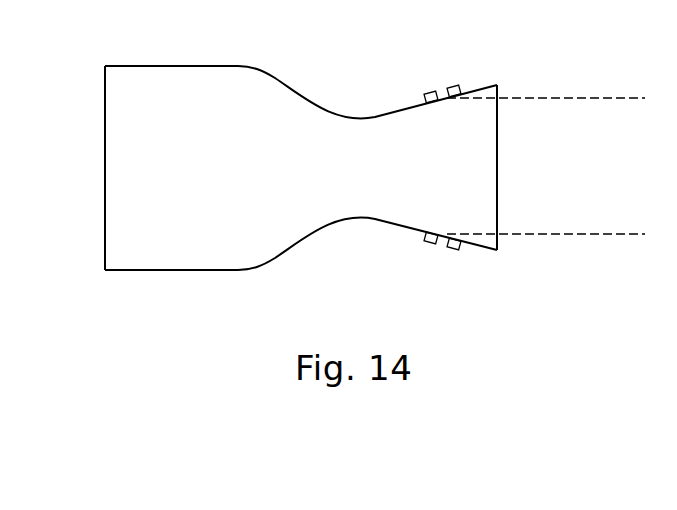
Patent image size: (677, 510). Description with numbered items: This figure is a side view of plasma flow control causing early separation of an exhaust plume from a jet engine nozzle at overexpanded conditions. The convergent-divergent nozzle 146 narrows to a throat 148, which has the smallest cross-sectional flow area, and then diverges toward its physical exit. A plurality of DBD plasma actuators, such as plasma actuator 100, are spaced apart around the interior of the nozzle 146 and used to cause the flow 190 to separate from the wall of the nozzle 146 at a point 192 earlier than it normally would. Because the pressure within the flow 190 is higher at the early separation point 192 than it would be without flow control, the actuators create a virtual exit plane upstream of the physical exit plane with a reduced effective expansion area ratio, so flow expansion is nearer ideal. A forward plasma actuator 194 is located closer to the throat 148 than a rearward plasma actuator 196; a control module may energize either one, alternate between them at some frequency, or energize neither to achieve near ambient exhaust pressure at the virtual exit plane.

The plasma actuator 100 is at (426, 92).
The convergent-divergent nozzle 146 is at (403, 110).
The throat 148 is at (357, 217).
The flow 190 is at (584, 98).
The early separation point 192 is at (500, 85).
The forward plasma actuator 194 is at (432, 245).
The rearward plasma actuator 196 is at (453, 251).